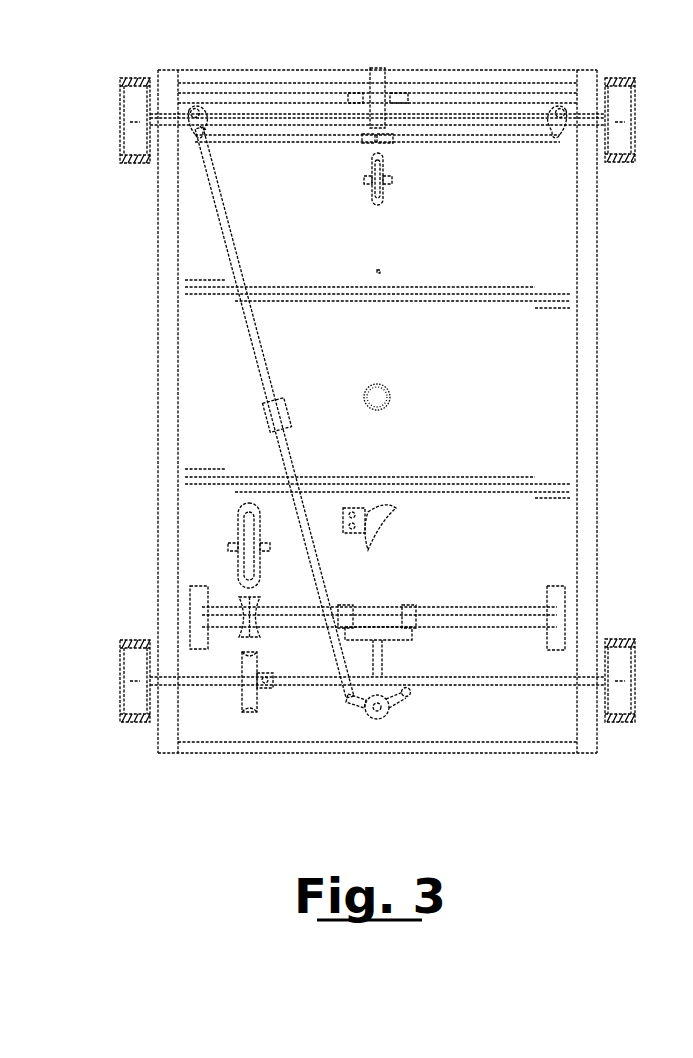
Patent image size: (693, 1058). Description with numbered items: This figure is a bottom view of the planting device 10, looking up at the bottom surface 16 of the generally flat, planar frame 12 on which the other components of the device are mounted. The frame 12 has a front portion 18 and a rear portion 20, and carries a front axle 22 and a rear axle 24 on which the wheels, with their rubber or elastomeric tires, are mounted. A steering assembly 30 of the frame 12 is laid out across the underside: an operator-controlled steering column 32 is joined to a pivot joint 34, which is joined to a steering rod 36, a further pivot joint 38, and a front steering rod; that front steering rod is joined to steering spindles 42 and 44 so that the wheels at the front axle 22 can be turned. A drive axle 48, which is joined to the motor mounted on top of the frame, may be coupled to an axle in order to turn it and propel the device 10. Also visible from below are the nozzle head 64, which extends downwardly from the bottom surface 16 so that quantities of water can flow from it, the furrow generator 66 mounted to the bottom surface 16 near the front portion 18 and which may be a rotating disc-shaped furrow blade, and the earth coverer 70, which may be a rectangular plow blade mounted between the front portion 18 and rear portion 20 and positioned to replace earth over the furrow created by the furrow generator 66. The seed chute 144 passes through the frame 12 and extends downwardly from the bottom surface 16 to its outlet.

The planting device 10 is at (93, 65).
The frame 12 is at (587, 420).
The bottom surface 16 is at (434, 377).
The front portion 18 is at (432, 72).
The rear portion 20 is at (262, 754).
The front axle 22 is at (289, 108).
The rear axle 24 is at (467, 680).
The steering assembly 30 is at (300, 364).
The steering column 32 is at (380, 711).
The pivot joint 34 is at (350, 700).
The steering rod 36 is at (264, 366).
The pivot joint 38 is at (208, 136).
The steering spindle 42 is at (195, 107).
The steering spindle 44 is at (560, 107).
The drive axle 48 is at (474, 618).
The nozzle head 64 is at (378, 410).
The furrow generator 66 is at (397, 181).
The earth coverer 70 is at (392, 530).
The seed chute 144 is at (382, 270).